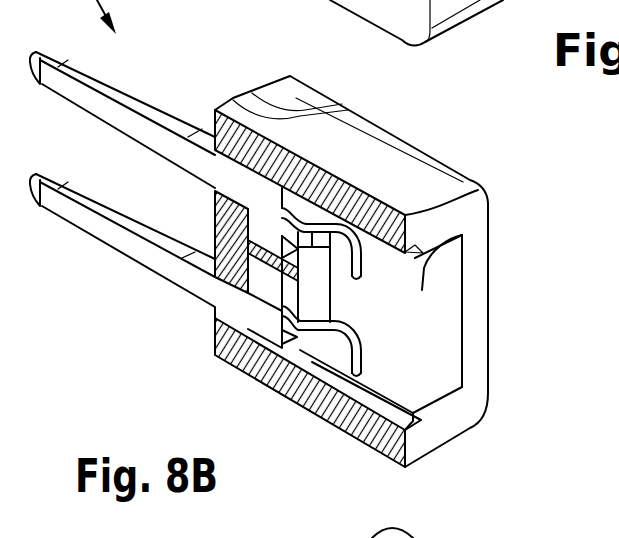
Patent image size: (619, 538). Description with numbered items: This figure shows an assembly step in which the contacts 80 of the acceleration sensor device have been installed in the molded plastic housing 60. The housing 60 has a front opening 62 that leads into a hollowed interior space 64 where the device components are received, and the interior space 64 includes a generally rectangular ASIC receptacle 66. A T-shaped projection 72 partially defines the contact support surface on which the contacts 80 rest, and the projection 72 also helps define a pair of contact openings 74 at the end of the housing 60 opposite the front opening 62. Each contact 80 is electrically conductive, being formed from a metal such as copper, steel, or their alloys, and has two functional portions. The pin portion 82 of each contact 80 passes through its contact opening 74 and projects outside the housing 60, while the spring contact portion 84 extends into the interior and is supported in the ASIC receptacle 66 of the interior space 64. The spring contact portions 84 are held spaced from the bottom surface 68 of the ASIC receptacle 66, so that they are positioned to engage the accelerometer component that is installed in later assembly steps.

The housing 60 is at (338, 410).
The front opening 62 is at (485, 208).
The interior space 64 is at (452, 308).
The ASIC receptacle 66 is at (406, 332).
The bottom surface 68 is at (452, 270).
The T-shaped projection 72 is at (215, 232).
The contact openings 74 is at (170, 158).
The contacts 80 is at (237, 187).
The pin portion 82 is at (113, 118).
The spring contact portion 84 is at (343, 235).